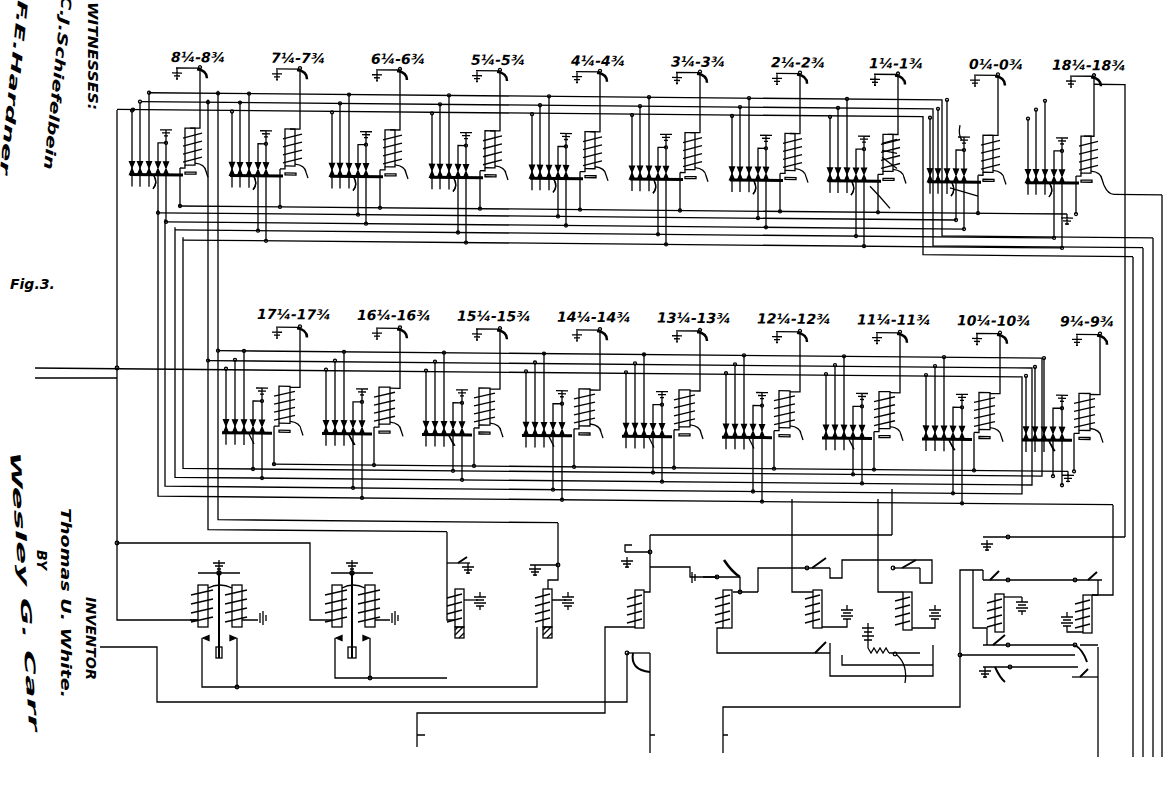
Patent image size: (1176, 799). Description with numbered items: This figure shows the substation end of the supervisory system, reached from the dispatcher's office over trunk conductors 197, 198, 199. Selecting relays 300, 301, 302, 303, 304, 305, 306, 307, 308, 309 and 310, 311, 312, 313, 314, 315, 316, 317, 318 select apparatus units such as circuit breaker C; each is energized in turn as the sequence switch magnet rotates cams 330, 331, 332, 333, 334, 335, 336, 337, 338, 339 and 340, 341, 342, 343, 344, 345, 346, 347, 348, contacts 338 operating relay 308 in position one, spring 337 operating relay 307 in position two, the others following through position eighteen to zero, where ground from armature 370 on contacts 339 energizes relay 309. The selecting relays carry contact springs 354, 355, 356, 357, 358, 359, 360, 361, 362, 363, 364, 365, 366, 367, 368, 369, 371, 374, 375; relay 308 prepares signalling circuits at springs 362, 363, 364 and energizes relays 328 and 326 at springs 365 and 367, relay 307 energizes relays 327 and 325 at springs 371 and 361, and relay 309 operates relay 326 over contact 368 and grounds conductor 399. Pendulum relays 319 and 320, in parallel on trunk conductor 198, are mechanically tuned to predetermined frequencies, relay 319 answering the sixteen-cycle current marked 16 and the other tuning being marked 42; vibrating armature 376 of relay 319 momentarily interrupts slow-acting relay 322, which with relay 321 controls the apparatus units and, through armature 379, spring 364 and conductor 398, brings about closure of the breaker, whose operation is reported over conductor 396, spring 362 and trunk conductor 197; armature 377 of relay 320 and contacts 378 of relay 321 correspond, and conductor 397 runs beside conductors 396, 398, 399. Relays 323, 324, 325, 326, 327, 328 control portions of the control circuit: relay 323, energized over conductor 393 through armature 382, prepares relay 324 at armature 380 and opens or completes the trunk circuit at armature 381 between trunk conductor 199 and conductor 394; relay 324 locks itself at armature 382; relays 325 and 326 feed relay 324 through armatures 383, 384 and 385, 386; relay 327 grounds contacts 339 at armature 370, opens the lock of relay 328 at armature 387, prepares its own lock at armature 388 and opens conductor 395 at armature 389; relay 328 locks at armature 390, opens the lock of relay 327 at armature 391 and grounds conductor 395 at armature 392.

The trunk conductor 197 is at (60, 359).
The trunk conductor 198 is at (60, 380).
The trunk conductor 199 is at (133, 647).
The selecting relay 300 is at (172, 157).
The selecting relay 301 is at (272, 167).
The selecting relay 302 is at (372, 159).
The selecting relay 303 is at (472, 169).
The selecting relay 304 is at (572, 161).
The selecting relay 305 is at (672, 171).
The selecting relay 306 is at (772, 162).
The selecting relay 307 is at (868, 172).
The selecting relay 308 is at (995, 141).
The relay 309 is at (1104, 160).
The selecting relay 310 is at (274, 414).
The selecting relay 311 is at (365, 425).
The selecting relay 312 is at (465, 416).
The selecting relay 313 is at (565, 427).
The selecting relay 314 is at (665, 418).
The selecting relay 315 is at (765, 429).
The selecting relay 316 is at (865, 420).
The selecting relay 317 is at (965, 430).
The selecting relay 318 is at (1065, 421).
The pendulum relay 319 is at (198, 603).
The pendulum relay 320 is at (375, 607).
The relay 321 is at (464, 632).
The slow-acting relay 322 is at (564, 607).
The relay 323 is at (644, 628).
The relay 324 is at (733, 607).
The relay 325 is at (823, 602).
The relay 326 is at (913, 600).
The relay 327 is at (1007, 597).
The relay 328 is at (1083, 597).
The sequence switch contacts 330 is at (203, 96).
The sequence switch contacts 331 is at (303, 97).
The sequence switch contacts 332 is at (403, 98).
The sequence switch cam 333 is at (503, 99).
The sequence switch contacts 334 is at (603, 100).
The sequence switch contacts 335 is at (703, 101).
The sequence switch contacts 336 is at (803, 102).
The sequence switch spring 337 is at (901, 103).
The sequence switch contacts 338 is at (1001, 104).
The sequence switch contacts 339 is at (1101, 96).
The sequence switch contacts 340 is at (303, 356).
The sequence switch contacts 341 is at (403, 357).
The sequence switch contacts 342 is at (503, 357).
The sequence switch contacts 343 is at (603, 358).
The sequence switch contacts 344 is at (703, 359).
The sequence switch contacts 345 is at (803, 360).
The sequence switch contacts 346 is at (903, 361).
The sequence switch contacts 347 is at (1003, 362).
The sequence switch contacts 348 is at (1103, 363).
The relay contacts 354 is at (139, 191).
The relay contacts 355 is at (239, 191).
The relay contacts 356 is at (339, 192).
The relay contacts 357 is at (439, 193).
The relay contacts 358 is at (539, 194).
The relay contacts 359 is at (639, 195).
The relay contacts 360 is at (739, 196).
The spring 361 is at (835, 197).
The spring 362 is at (904, 167).
The spring 363 is at (904, 154).
The spring 364 is at (904, 140).
The spring 365 is at (978, 194).
The conductor 366 is at (1120, 200).
The spring 367 is at (962, 125).
The contact 368 is at (684, 323).
The relay contacts 369 is at (436, 448).
The armature 370 is at (1053, 535).
The spring 371 is at (895, 201).
The relay contacts 374 is at (935, 453).
The relay contacts 375 is at (1035, 454).
The armature 376 is at (232, 574).
The relay armature contact 377 is at (365, 574).
The switch 378 is at (476, 563).
The armature 379 is at (540, 549).
The armature 380 is at (623, 548).
The armature 381 is at (656, 666).
The armature 382 is at (725, 569).
The armature 383 is at (845, 567).
The armature 384 is at (810, 660).
The armature 385 is at (905, 566).
The armature 386 is at (891, 664).
The armature 387 is at (1024, 600).
The armature 388 is at (1010, 643).
The armature 389 is at (1028, 685).
The armature 390 is at (1086, 577).
The armature 391 is at (1097, 701).
The armature 392 is at (1075, 688).
The conductor 393 is at (526, 688).
The conductor 394 is at (668, 703).
The conductor 395 is at (899, 661).
The conductor 396 is at (1118, 420).
The conductor 397 is at (1143, 712).
The conductor 398 is at (1153, 722).
The conductor 399 is at (1162, 735).
The sixteen-cycle alternating current 16 is at (277, 598).
The 42-cycle alternating current source 42 is at (405, 581).